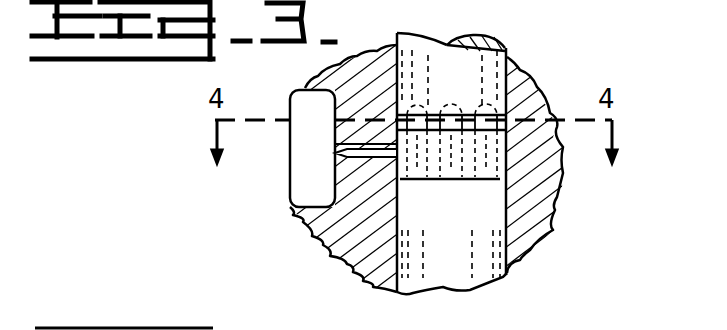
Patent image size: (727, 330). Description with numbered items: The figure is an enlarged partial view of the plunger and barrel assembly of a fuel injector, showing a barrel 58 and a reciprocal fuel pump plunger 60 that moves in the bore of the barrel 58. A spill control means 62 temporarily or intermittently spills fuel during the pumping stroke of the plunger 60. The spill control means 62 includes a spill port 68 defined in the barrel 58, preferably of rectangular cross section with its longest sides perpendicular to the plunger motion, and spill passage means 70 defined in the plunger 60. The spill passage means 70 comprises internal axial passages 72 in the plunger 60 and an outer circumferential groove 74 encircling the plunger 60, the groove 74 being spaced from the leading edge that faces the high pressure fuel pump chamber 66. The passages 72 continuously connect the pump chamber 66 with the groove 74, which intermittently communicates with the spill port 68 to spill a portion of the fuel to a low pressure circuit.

The barrel 58 is at (557, 197).
The reciprocal fuel pump plunger 60 is at (490, 35).
The spill control means 62 is at (268, 221).
The high pressure fuel pump chamber 66 is at (462, 263).
The spill port 68 is at (335, 151).
The spill passage means 70 is at (535, 150).
The internal axial passages 72 is at (481, 199).
The circumferential groove 74 is at (507, 111).